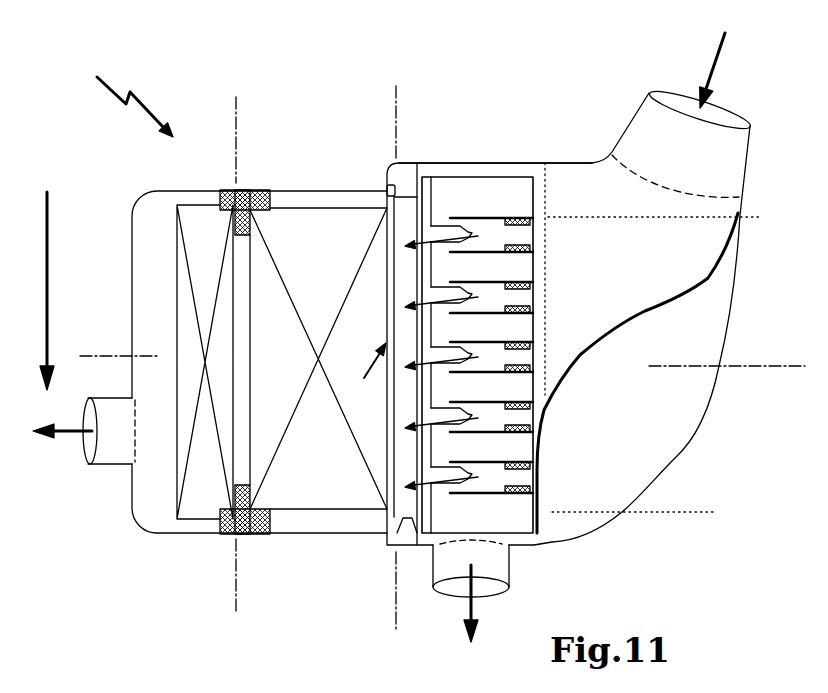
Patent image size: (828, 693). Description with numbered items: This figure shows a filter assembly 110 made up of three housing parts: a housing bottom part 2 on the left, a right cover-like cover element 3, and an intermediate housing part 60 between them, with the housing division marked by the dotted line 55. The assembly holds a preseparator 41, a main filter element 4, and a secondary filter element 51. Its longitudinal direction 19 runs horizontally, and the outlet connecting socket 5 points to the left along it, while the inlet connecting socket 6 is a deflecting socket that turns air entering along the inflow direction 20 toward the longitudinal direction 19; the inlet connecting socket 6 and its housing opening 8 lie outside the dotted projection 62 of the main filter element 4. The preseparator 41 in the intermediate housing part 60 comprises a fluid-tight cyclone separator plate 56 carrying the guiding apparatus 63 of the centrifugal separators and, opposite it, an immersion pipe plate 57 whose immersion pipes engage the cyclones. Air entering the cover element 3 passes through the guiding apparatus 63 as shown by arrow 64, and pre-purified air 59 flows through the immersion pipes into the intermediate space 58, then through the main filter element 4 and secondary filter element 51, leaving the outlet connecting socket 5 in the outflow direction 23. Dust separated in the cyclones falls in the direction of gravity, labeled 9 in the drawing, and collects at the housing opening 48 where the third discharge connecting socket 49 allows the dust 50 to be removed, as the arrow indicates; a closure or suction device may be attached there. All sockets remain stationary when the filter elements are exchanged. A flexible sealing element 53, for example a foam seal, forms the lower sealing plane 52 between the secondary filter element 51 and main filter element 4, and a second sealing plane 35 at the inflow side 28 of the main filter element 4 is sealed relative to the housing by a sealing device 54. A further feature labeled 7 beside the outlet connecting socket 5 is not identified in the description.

The filter assembly 110 is at (124, 93).
The housing bottom part 2 is at (157, 200).
The cover element 3 is at (662, 447).
The main filter element 4 is at (328, 499).
The outlet connecting socket 5 is at (110, 450).
The inlet connecting socket 6 is at (729, 145).
The opening 7 is at (128, 424).
The housing opening 8 is at (712, 192).
The flow direction 9 is at (47, 282).
The longitudinal direction 19 is at (774, 368).
The inflow direction 20 is at (720, 58).
The outflow direction 23 is at (63, 434).
The inflow side 28 is at (369, 374).
The sealing plane 35 is at (395, 98).
The preseparator 41 is at (494, 150).
The housing opening 48 is at (453, 542).
The discharge connecting socket 49 is at (499, 567).
The dust 50 is at (473, 609).
The secondary filter element 51 is at (203, 502).
The sealing plane 52 is at (233, 138).
The flexible sealing element 53 is at (252, 200).
The sealing device 54 is at (406, 168).
The dotted line 55 is at (554, 173).
The cyclone separator plate 56 is at (543, 258).
The immersion pipe plate 57 is at (436, 195).
The intermediate space 58 is at (406, 212).
The pre-purified air 59 is at (409, 301).
The intermediate housing part 60 is at (524, 160).
The projection 62 is at (680, 515).
The guiding apparatus 63 is at (522, 307).
The arrow 64 is at (548, 230).